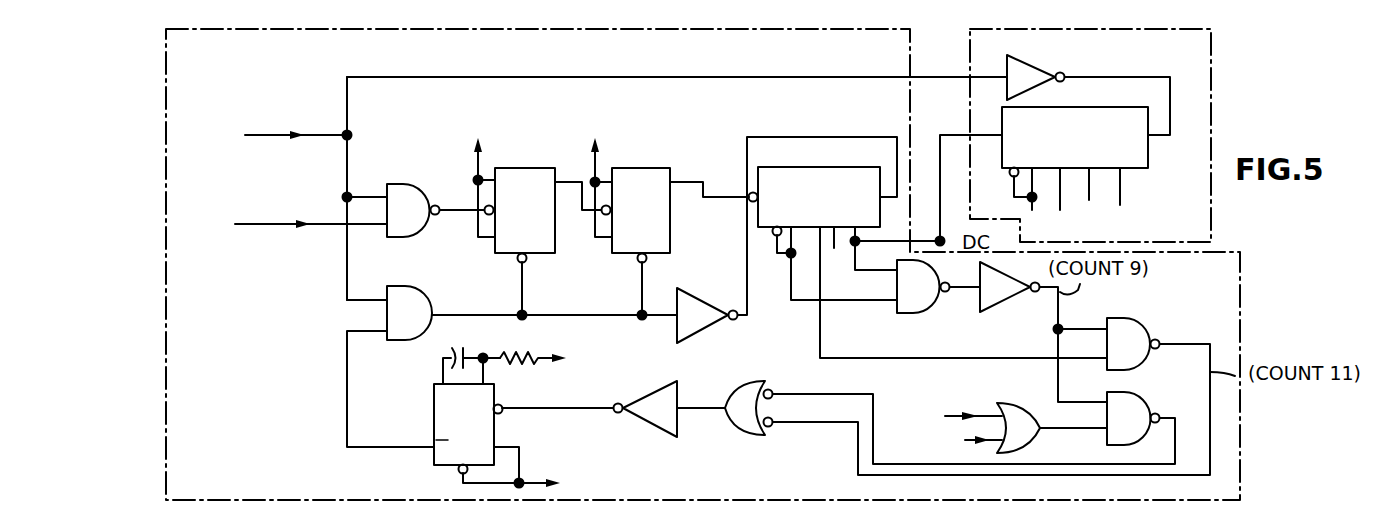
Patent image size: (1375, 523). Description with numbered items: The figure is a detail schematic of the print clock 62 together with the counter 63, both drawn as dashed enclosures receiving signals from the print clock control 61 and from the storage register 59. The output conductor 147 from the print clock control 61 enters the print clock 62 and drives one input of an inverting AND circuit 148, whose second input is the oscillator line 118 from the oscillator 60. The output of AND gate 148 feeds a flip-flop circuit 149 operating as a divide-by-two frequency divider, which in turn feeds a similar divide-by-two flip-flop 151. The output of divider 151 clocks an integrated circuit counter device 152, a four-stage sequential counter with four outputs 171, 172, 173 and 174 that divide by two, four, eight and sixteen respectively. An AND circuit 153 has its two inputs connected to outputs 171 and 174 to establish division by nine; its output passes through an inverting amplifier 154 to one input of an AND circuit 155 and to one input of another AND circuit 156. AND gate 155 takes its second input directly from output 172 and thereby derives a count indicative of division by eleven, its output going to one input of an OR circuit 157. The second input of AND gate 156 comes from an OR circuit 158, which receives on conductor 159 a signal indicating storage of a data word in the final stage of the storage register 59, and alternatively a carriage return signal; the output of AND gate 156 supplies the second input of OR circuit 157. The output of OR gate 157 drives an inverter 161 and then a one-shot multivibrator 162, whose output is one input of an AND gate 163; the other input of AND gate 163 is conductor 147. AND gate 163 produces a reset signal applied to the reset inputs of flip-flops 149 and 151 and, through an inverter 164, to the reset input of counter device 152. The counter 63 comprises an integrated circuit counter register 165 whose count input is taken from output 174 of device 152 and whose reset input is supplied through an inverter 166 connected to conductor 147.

The print clock 62 is at (165, 322).
The counter 63 is at (1211, 93).
The print clock control 61 is at (253, 87).
The oscillator 60 is at (249, 260).
The storage register 59 is at (962, 414).
The conductor 147 is at (305, 140).
The oscillator line 118 is at (278, 223).
The inverting AND circuit 148 is at (418, 170).
The flip-flop circuit 149 is at (492, 253).
The flip-flop 151 is at (630, 168).
The integrated circuit counter device 152 is at (820, 167).
The AND circuit 153 is at (907, 313).
The inverting amplifier 154 is at (1012, 302).
The AND circuit 155 is at (1140, 325).
The AND circuit 156 is at (1145, 398).
The OR circuit 157 is at (752, 382).
The OR circuit 158 is at (1030, 440).
The conductor 159 is at (946, 416).
The inverter 161 is at (658, 385).
The one-shot multivibrator 162 is at (494, 430).
The AND gate 163 is at (402, 340).
The inverter 164 is at (692, 290).
The integrated circuit counter register 165 is at (1140, 168).
The inverter 166 is at (1038, 62).
The output 171 is at (788, 268).
The output 172 is at (812, 265).
The output 173 is at (834, 248).
The output 174 is at (855, 250).